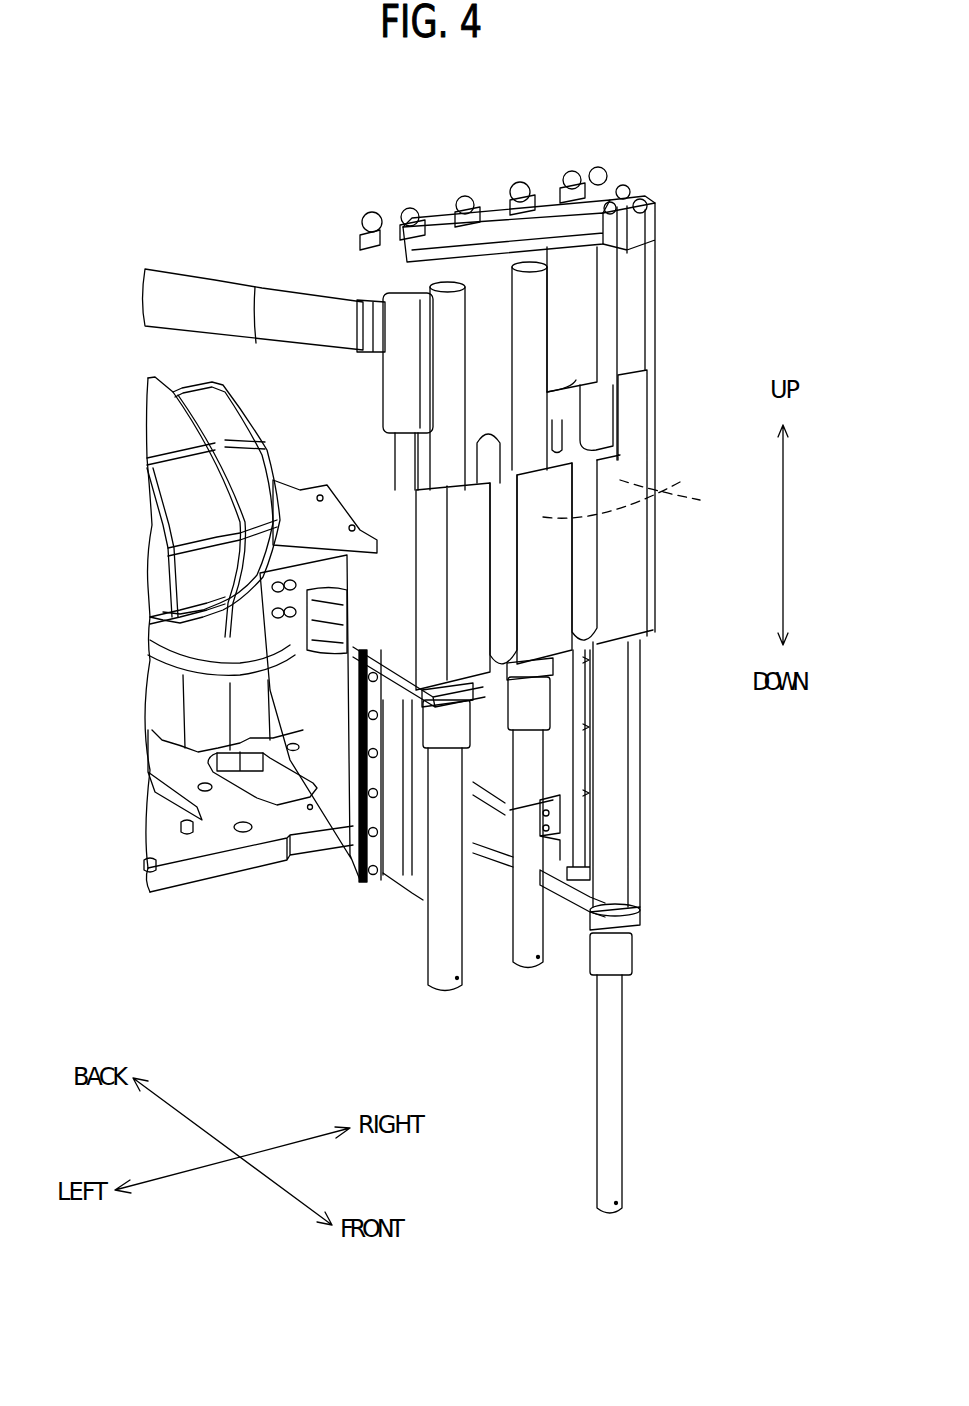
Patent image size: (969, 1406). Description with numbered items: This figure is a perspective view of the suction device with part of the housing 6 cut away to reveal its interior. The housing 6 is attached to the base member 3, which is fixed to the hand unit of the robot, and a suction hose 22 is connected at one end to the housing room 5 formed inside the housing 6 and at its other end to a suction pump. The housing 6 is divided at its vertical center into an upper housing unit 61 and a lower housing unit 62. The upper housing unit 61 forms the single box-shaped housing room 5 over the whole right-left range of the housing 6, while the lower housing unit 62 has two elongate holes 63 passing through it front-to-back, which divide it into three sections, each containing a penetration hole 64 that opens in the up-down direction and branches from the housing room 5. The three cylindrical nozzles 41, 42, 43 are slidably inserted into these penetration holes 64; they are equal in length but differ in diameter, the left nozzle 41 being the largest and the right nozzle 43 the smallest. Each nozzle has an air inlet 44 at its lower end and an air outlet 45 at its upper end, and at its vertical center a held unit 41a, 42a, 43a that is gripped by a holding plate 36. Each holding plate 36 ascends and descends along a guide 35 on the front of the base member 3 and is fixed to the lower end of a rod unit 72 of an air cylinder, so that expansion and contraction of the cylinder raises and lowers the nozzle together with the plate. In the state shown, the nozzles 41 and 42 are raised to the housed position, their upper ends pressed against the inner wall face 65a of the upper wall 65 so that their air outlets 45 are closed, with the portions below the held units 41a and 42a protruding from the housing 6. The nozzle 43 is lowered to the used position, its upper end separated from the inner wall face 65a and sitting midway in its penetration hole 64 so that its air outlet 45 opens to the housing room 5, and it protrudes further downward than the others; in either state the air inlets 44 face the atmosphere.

The base member 3 is at (200, 885).
The suction hose 22 is at (213, 280).
The guide 35 is at (368, 845).
The holding plate 36 is at (345, 818).
The housing room 5 is at (578, 343).
The housing 6 is at (672, 253).
The upper housing unit 61 is at (655, 330).
The lower housing unit 62 is at (655, 405).
The elongate hole 63 is at (507, 598).
The penetration hole 64 is at (640, 499).
The upper wall 65 is at (582, 210).
The inner wall face 65a is at (578, 252).
The air outlet 45 is at (527, 263).
The nozzle 41 is at (423, 947).
The nozzle 42 is at (510, 943).
The nozzle 43 is at (633, 1053).
The held unit 41a is at (453, 723).
The held unit 42a is at (535, 705).
The held unit 43a is at (633, 942).
The air inlet 44 is at (445, 993).
The rod unit 72 is at (580, 830).